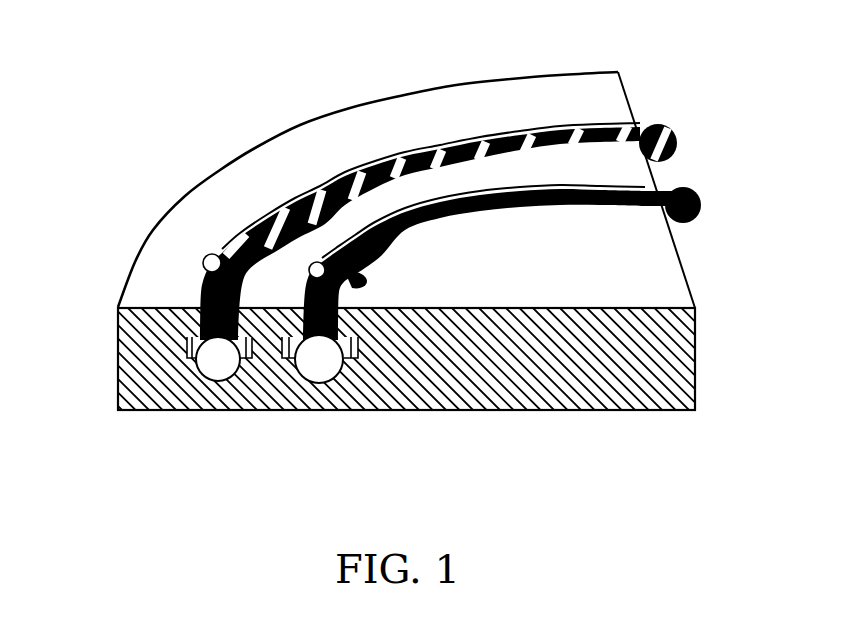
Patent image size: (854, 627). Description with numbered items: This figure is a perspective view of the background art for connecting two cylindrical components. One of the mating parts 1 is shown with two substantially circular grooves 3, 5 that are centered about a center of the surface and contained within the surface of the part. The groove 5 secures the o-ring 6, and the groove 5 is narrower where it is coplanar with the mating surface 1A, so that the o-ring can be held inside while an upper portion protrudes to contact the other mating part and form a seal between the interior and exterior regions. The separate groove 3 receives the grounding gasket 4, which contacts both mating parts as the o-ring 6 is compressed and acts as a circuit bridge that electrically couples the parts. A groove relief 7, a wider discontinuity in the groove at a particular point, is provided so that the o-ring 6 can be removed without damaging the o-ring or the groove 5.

The mating part 1 is at (683, 267).
The mating surface 1A is at (562, 266).
The groove 3 is at (551, 124).
The grounding gasket 4 is at (678, 133).
The groove 5 is at (368, 236).
The o-ring 6 is at (702, 194).
The groove relief 7 is at (309, 264).